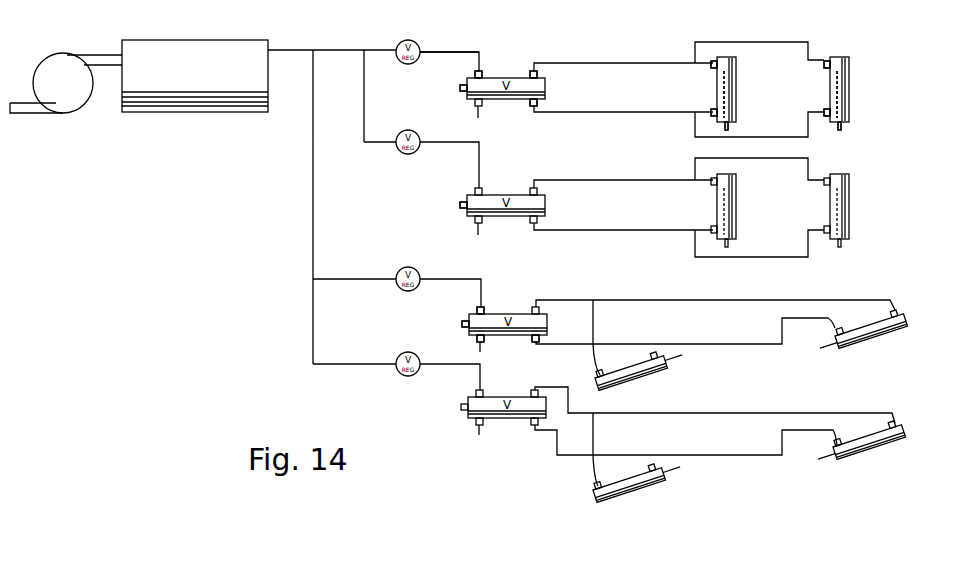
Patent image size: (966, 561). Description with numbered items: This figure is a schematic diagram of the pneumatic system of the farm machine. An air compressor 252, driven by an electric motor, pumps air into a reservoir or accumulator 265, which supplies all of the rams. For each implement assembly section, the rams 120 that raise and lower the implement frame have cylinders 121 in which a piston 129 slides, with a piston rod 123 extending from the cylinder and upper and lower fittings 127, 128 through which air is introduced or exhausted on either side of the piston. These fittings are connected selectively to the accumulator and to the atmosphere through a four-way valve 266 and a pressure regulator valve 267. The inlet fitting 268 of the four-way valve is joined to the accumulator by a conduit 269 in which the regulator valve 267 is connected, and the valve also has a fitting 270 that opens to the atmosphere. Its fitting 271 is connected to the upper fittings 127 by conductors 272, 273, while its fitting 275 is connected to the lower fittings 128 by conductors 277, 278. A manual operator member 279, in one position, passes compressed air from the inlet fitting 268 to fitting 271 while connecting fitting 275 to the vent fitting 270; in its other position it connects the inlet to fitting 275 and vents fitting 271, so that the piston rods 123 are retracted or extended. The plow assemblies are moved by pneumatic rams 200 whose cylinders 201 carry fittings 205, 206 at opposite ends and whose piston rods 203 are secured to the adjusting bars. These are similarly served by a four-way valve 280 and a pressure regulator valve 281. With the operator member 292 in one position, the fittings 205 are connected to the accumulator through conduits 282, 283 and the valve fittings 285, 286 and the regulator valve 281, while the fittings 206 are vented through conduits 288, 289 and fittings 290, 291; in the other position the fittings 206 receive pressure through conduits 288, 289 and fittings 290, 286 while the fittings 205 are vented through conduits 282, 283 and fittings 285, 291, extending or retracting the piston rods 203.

The air compressor 252 is at (88, 105).
The accumulator 265 is at (203, 106).
The four-way valve 266 is at (519, 76).
The pressure regulator valve 267 is at (404, 40).
The inlet fitting 268 is at (483, 70).
The conduit 269 is at (460, 50).
The vent fitting 270 is at (482, 110).
The fitting 271 is at (538, 72).
The conductor 272 is at (642, 63).
The conductor 273 is at (778, 28).
The fitting 275 is at (540, 100).
The conductor 277 is at (626, 112).
The conductor 278 is at (770, 137).
The manual operator member 279 is at (460, 88).
The four-way valve 280 is at (517, 314).
The pressure regulator valve 281 is at (414, 267).
The conduit 282 is at (755, 344).
The conduit 283 is at (650, 352).
The fitting 285 is at (534, 342).
The fitting 286 is at (480, 307).
The conduit 288 is at (712, 302).
The conduit 289 is at (596, 302).
The fitting 290 is at (544, 300).
The fitting 291 is at (478, 338).
The operator member 292 is at (462, 324).
The ram 120 is at (738, 193).
The cylinder 121 is at (779, 132).
The piston rod 123 is at (732, 128).
The upper fitting 127 is at (714, 61).
The lower fitting 128 is at (713, 109).
The piston 129 is at (715, 72).
The pneumatic ram 200 is at (642, 380).
The cylinder 201 is at (620, 390).
The piston rod 203 is at (676, 356).
The fitting 205 is at (657, 354).
The fitting 206 is at (598, 374).